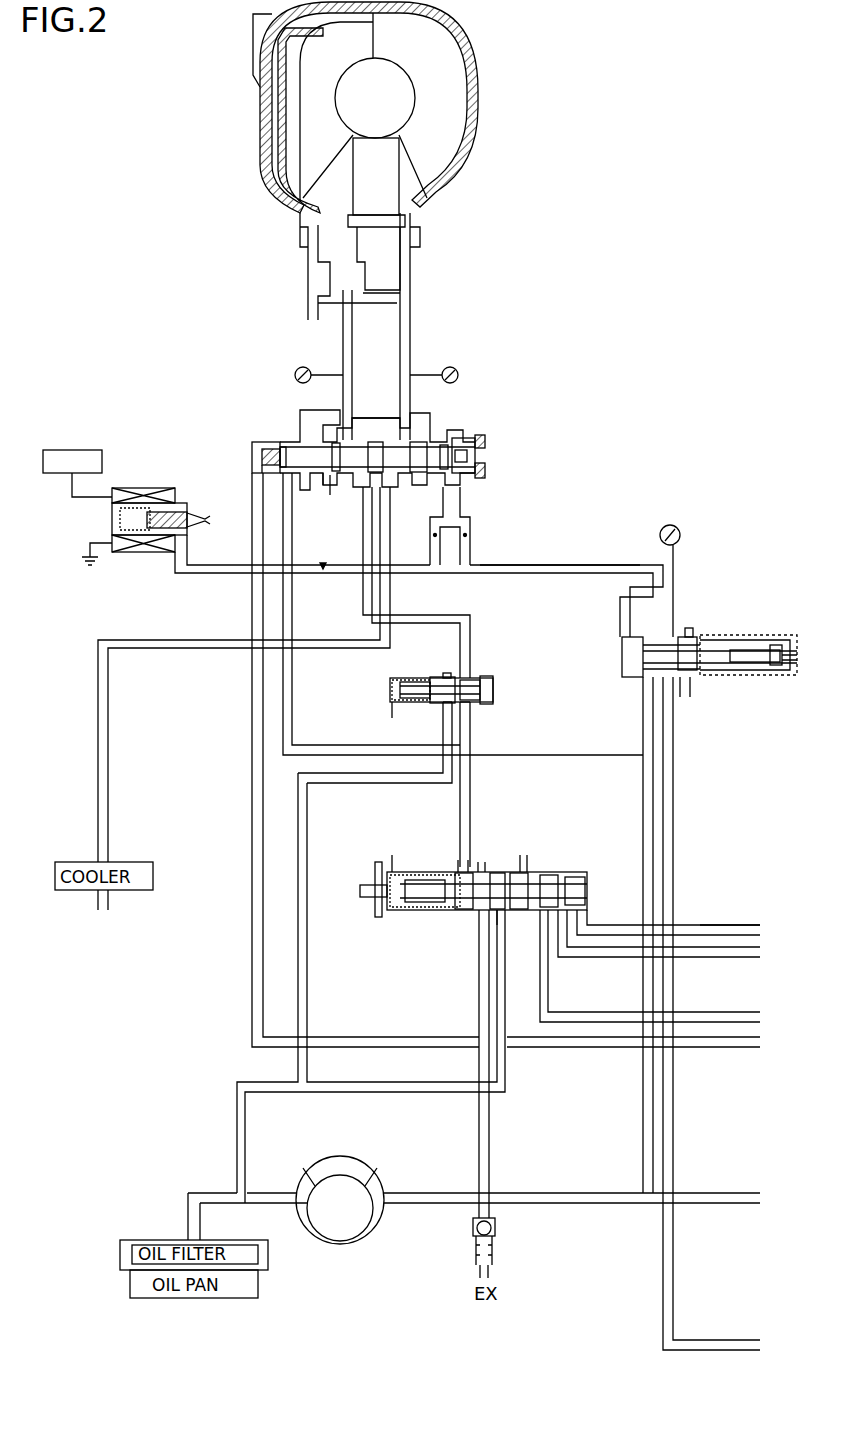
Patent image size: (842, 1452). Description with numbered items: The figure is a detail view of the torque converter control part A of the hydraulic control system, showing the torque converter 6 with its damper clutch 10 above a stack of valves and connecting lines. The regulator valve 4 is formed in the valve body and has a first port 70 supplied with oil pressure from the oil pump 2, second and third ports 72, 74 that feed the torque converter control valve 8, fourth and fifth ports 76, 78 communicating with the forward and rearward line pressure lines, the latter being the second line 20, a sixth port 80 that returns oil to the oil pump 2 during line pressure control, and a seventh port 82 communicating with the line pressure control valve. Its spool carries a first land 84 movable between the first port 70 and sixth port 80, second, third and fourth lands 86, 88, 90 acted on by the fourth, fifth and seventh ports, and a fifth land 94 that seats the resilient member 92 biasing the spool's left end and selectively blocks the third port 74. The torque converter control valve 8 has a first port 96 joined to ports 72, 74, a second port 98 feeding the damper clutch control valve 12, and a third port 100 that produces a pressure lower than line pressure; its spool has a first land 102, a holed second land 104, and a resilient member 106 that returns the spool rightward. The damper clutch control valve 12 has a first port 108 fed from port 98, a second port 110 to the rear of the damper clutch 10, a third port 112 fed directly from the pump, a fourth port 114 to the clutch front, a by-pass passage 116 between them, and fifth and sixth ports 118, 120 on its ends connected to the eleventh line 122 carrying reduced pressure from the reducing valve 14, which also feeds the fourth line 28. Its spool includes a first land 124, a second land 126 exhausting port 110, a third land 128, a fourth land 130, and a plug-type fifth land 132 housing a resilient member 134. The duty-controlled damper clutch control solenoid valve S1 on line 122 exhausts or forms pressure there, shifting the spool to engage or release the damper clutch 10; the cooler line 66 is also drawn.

The oil pump 2 is at (340, 1250).
The regulator valve 4 is at (560, 1012).
The torque converter 6 is at (249, 222).
The torque converter control valve 8 is at (465, 685).
The damper clutch 10 is at (278, 133).
The damper clutch control valve 12 is at (366, 470).
The reducing valve 14 is at (737, 624).
The second line 20 is at (722, 960).
The fourth line 28 is at (663, 1275).
The cooler line 66 is at (252, 907).
The first port 70 is at (488, 912).
The second port 72 is at (482, 864).
The third port 74 is at (463, 865).
The fourth port 76 is at (590, 908).
The fifth port 78 is at (562, 912).
The sixth port 80 is at (503, 912).
The seventh port 82 is at (545, 912).
The first land 84 is at (515, 912).
The second land 86 is at (575, 883).
The third land 88 is at (550, 875).
The fourth land 90 is at (528, 872).
The resilient member 92 is at (413, 870).
The fifth land 94 is at (470, 912).
The first port 96 is at (470, 705).
The second port 98 is at (470, 678).
The third port 100 is at (440, 702).
The first land 102 is at (432, 675).
The second land 104 is at (500, 677).
The resilient member 106 is at (413, 680).
The first port 108 is at (365, 477).
The second port 110 is at (333, 443).
The third port 112 is at (268, 480).
The fourth port 114 is at (412, 442).
The by-pass passage 116 is at (372, 415).
The fifth port 118 is at (250, 462).
The sixth port 120 is at (452, 480).
The eleventh line 122 is at (552, 565).
The first land 124 is at (378, 470).
The second land 126 is at (325, 472).
The third land 128 is at (444, 450).
The fourth land 130 is at (482, 442).
The fifth land 132 is at (300, 440).
The resilient member 134 is at (268, 447).
The torque converter control part A is at (506, 196).
The damper clutch control solenoid valve S1 is at (147, 477).